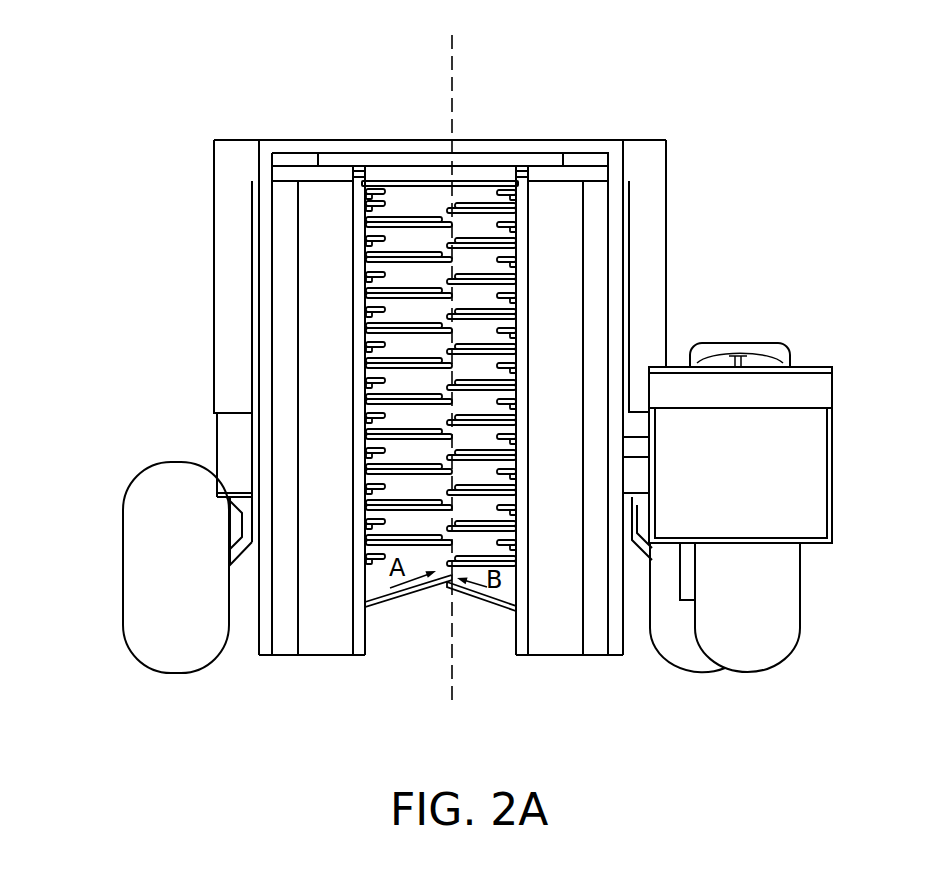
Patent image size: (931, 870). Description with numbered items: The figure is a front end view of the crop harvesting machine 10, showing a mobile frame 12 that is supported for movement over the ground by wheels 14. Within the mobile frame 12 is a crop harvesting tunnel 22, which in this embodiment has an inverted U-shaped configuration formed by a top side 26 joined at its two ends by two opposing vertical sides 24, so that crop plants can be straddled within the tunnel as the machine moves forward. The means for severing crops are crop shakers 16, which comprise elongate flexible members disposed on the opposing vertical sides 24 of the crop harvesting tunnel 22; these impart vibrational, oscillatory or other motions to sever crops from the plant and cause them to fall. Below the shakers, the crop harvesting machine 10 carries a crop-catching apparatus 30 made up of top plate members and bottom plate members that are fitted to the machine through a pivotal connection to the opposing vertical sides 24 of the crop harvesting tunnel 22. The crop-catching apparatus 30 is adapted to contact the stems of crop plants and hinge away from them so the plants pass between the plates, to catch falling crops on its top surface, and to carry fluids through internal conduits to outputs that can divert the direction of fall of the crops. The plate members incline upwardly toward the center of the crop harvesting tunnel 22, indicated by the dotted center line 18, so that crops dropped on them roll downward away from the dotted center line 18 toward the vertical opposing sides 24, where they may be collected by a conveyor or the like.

The crop harvesting machine 10 is at (651, 100).
The mobile frame 12 is at (214, 159).
The wheels 14 is at (127, 490).
The crop shakers 16 is at (447, 200).
The dotted center line 18 is at (453, 43).
The crop harvesting tunnel 22 is at (498, 173).
The opposing vertical sides 24 is at (360, 266).
The top side 26 is at (468, 173).
The crop-catching apparatus 30 is at (407, 602).